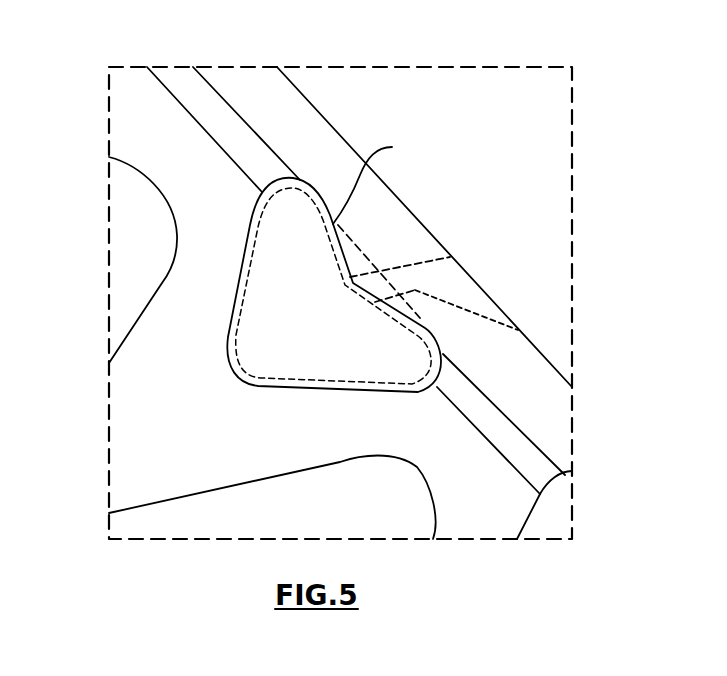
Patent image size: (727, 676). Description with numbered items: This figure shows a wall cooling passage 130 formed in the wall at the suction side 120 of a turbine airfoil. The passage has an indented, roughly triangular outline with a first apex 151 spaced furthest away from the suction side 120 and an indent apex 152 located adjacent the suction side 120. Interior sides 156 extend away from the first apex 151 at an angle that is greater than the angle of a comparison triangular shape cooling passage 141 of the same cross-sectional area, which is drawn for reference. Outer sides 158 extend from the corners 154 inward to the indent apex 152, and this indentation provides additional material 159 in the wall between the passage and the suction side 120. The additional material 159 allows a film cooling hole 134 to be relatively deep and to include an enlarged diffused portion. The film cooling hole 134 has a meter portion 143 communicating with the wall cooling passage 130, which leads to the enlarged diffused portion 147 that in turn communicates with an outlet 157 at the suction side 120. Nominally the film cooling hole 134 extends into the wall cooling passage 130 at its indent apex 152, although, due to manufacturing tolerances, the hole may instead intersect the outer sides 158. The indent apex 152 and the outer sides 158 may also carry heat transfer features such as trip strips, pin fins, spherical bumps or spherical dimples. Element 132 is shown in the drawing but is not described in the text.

The suction side 120 is at (350, 145).
The wall cooling passage 130 is at (302, 232).
The strap 132 is at (218, 118).
The film cooling hole 134 is at (442, 282).
The triangular shape cooling passage 141 is at (381, 281).
The meter portion 143 is at (383, 280).
The enlarged diffused portion 147 is at (483, 300).
The first apex 151 is at (232, 372).
The indent apex 152 is at (350, 290).
The corners 154 is at (280, 177).
The interior sides 156 is at (235, 293).
The outlet 157 is at (468, 268).
The outer sides 158 is at (462, 348).
The additional material 159 is at (352, 256).